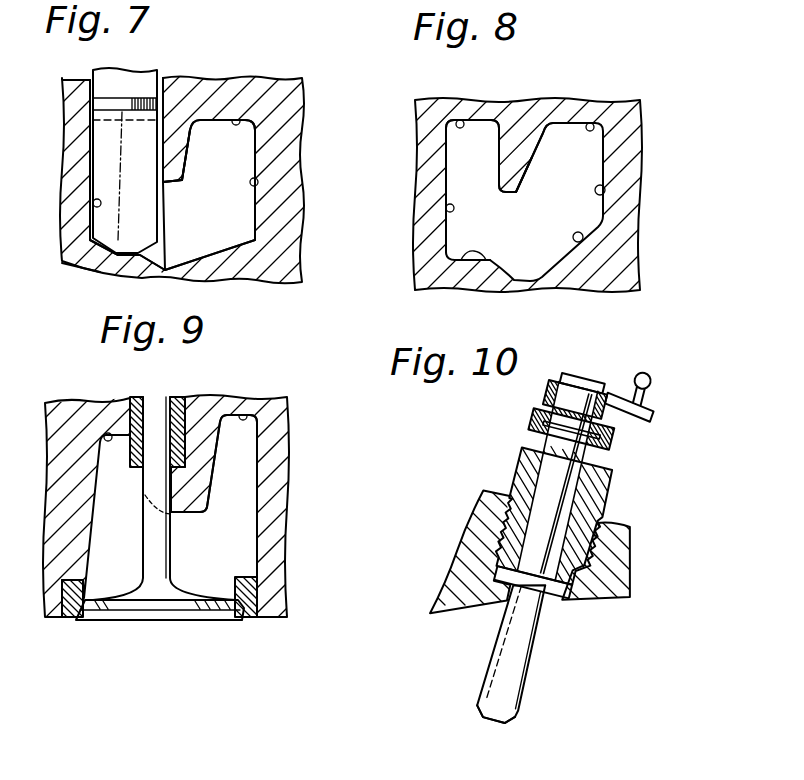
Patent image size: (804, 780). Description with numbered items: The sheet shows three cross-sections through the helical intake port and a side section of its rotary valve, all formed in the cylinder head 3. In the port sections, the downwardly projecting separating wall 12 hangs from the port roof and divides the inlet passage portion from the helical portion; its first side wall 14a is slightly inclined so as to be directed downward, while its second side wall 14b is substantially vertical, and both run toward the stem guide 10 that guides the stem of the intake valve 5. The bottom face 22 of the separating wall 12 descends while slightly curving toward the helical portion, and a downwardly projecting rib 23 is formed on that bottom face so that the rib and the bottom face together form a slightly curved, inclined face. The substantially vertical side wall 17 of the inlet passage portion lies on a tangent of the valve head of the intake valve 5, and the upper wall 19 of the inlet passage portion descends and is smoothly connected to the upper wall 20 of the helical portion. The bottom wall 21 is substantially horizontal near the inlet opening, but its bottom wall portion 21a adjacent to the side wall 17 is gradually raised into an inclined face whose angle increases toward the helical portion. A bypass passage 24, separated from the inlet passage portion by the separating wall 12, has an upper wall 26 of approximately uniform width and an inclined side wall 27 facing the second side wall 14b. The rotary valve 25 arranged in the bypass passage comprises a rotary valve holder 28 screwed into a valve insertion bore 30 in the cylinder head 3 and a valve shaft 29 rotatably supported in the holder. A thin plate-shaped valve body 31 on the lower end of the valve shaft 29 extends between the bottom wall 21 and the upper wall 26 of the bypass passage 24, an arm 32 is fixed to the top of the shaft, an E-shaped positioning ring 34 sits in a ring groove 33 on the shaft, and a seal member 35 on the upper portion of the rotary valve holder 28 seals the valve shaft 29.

In FIG. 7, the cylinder head 3 is at (288, 101).
In FIG. 8, the cylinder head 3 is at (630, 122).
In FIG. 10, the cylinder head 3 is at (625, 540).
In FIG. 9, the intake valve 5 is at (137, 612).
In FIG. 9, the stem guide 10 is at (140, 452).
In FIG. 7, the separating wall 12 is at (186, 158).
In FIG. 8, the separating wall 12 is at (538, 164).
In FIG. 9, the separating wall 12 is at (208, 462).
In FIG. 7, the first side wall 14a is at (193, 136).
In FIG. 8, the first side wall 14a is at (543, 136).
In FIG. 9, the first side wall 14a is at (206, 482).
In FIG. 7, the second side wall 14b is at (152, 162).
In FIG. 8, the second side wall 14b is at (496, 162).
In FIG. 7, the side wall 17 is at (258, 182).
In FIG. 8, the side wall 17 is at (605, 190).
In FIG. 7, the upper wall 19 is at (238, 120).
In FIG. 8, the upper wall 19 is at (590, 122).
In FIG. 9, the upper wall 20 is at (105, 433).
In FIG. 7, the bottom wall 21 is at (252, 9).
In FIG. 8, the bottom wall 21 is at (460, 272).
In FIG. 8, the bottom wall portion 21a is at (583, 238).
In FIG. 7, the bottom face 22 is at (177, 185).
In FIG. 8, the bottom face 22 is at (525, 187).
In FIG. 8, the rib 23 is at (512, 194).
In FIG. 8, the bypass passage 24 is at (463, 140).
In FIG. 7, the rotary valve 25 is at (110, 142).
In FIG. 10, the rotary valve 25 is at (542, 649).
In FIG. 7, the upper wall 26 is at (176, 112).
In FIG. 8, the upper wall 26 is at (456, 119).
In FIG. 10, the upper wall 26 is at (462, 600).
In FIG. 7, the side wall 27 is at (93, 205).
In FIG. 8, the side wall 27 is at (445, 208).
In FIG. 10, the rotary valve holder 28 is at (603, 492).
In FIG. 10, the valve shaft 29 is at (547, 497).
In FIG. 10, the valve insertion bore 30 is at (503, 552).
In FIG. 7, the valve body 31 is at (73, 272).
In FIG. 10, the valve body 31 is at (513, 684).
In FIG. 10, the arm 32 is at (638, 410).
In FIG. 10, the ring groove 33 is at (553, 403).
In FIG. 10, the positioning ring 34 is at (607, 424).
In FIG. 10, the seal member 35 is at (537, 420).